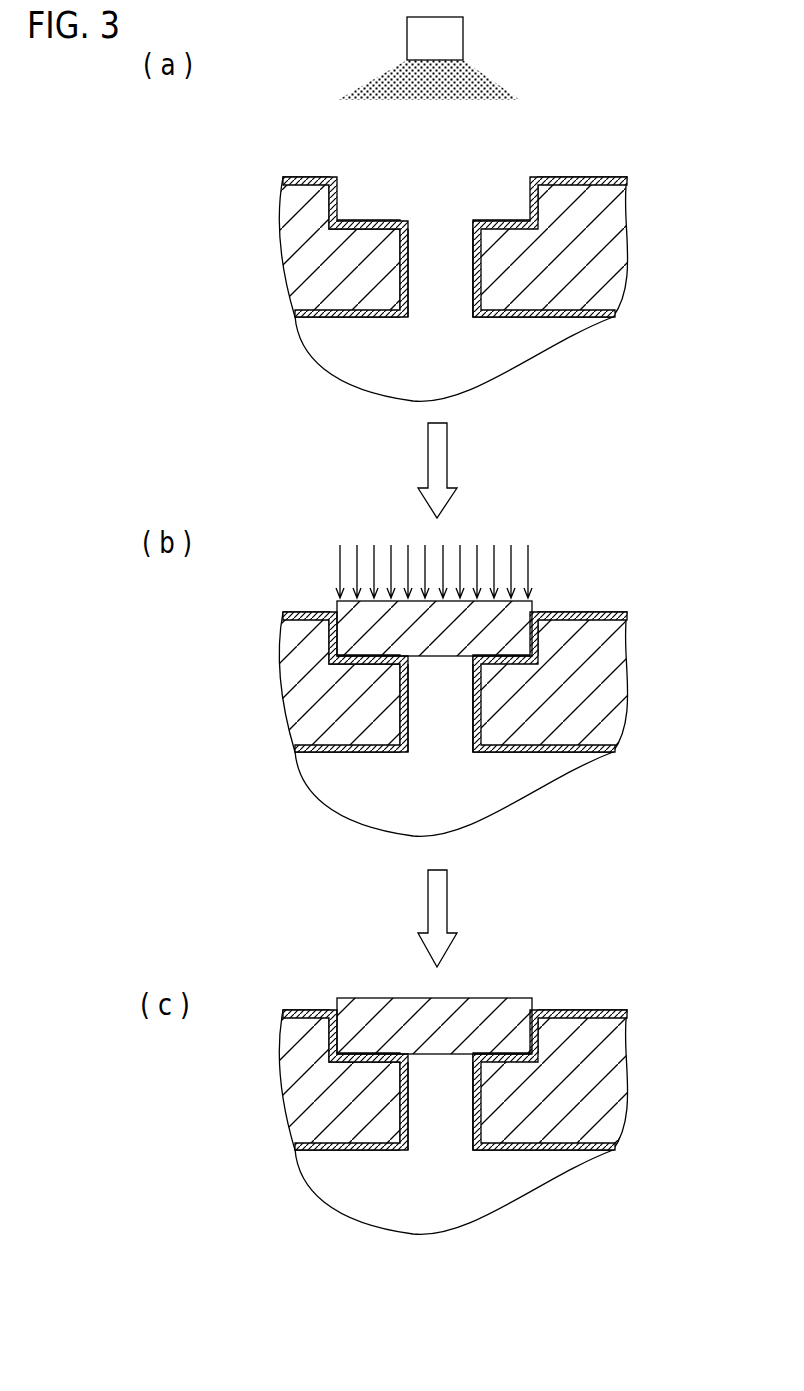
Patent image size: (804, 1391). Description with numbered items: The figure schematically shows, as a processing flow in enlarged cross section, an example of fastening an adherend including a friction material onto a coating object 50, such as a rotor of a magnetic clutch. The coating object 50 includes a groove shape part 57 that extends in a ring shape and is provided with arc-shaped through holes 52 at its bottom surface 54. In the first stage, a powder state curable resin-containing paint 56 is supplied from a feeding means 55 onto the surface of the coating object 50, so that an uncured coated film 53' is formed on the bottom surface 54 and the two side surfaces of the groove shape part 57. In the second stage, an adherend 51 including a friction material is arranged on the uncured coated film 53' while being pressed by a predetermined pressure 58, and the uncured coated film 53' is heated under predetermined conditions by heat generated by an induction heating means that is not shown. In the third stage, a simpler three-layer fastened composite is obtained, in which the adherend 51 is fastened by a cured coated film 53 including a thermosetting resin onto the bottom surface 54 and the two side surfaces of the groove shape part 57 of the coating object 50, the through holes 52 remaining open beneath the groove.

The coating object 50 is at (613, 257).
The adherend 51 is at (358, 645).
The arc-shaped through holes 52 is at (440, 300).
The cured coated film 53 is at (575, 1080).
The uncured coated film 53' is at (499, 435).
The bottom surface 54 is at (363, 232).
The feeding means 55 is at (463, 35).
The powder state curable resin-containing paint 56 is at (482, 78).
The groove shape part 57 is at (330, 194).
The predetermined pressure 58 is at (530, 567).